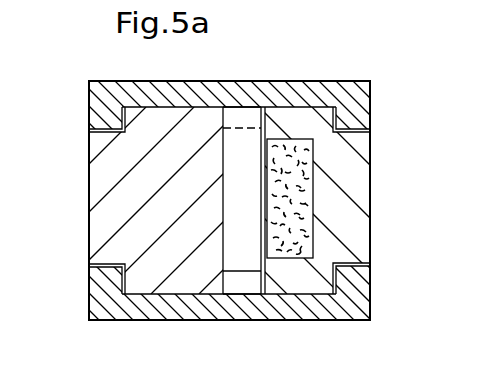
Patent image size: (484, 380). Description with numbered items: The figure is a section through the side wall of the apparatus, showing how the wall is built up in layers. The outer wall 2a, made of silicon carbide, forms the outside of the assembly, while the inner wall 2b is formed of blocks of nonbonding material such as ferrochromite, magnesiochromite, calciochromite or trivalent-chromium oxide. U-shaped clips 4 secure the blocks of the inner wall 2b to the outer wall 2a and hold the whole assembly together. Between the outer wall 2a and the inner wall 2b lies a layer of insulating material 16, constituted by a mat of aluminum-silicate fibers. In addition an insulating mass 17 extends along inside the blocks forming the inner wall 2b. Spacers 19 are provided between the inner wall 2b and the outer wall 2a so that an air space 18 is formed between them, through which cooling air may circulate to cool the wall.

The U-shaped clip 4 is at (360, 108).
The outer wall 2a is at (98, 217).
The inner wall 2b is at (352, 172).
The insulating material 16 is at (265, 112).
The insulating mass 17 is at (305, 216).
The air space 18 is at (243, 145).
The spacer 19 is at (239, 283).